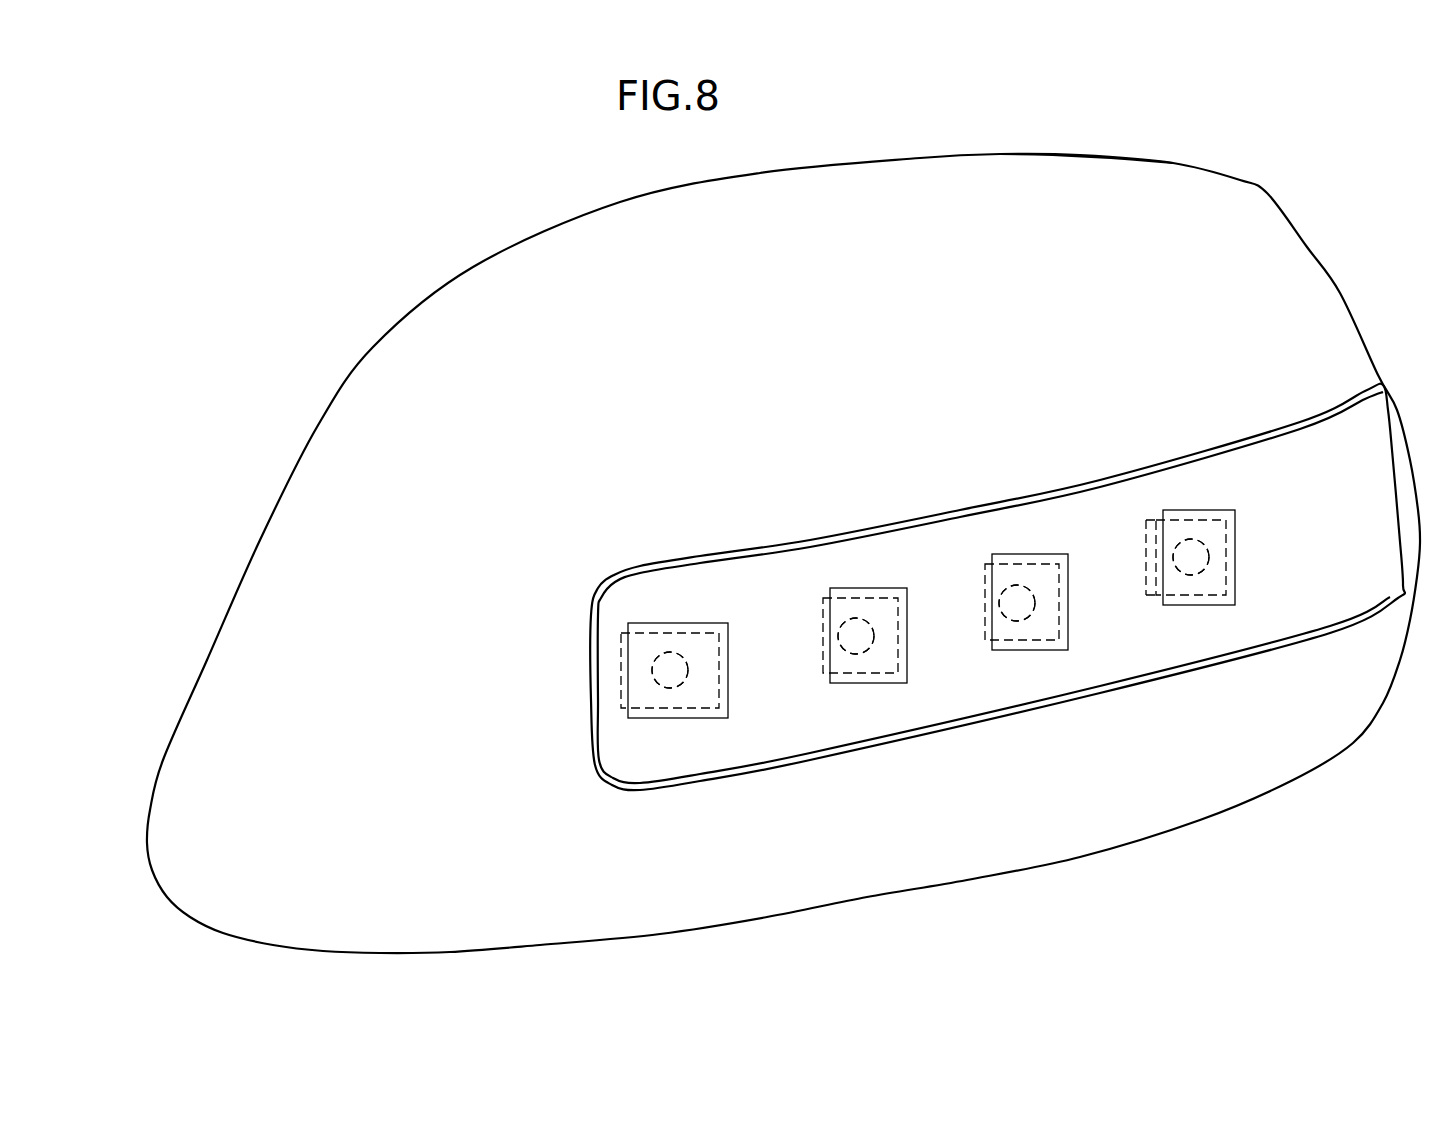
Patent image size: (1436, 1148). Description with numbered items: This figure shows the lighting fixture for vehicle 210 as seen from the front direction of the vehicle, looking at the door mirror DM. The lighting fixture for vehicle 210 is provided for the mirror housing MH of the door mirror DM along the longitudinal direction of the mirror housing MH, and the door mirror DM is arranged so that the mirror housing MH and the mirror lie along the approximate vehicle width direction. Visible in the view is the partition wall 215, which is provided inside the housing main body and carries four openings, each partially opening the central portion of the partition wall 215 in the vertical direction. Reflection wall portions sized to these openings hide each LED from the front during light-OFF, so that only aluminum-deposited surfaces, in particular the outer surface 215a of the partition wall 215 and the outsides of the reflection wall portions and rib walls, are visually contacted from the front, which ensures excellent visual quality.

The door mirror DM is at (1262, 160).
The mirror housing MH is at (1088, 177).
The lighting fixture for vehicle 210 is at (1137, 393).
The partition wall 215 is at (1305, 597).
The outer surface of the partition wall 215a is at (1248, 633).